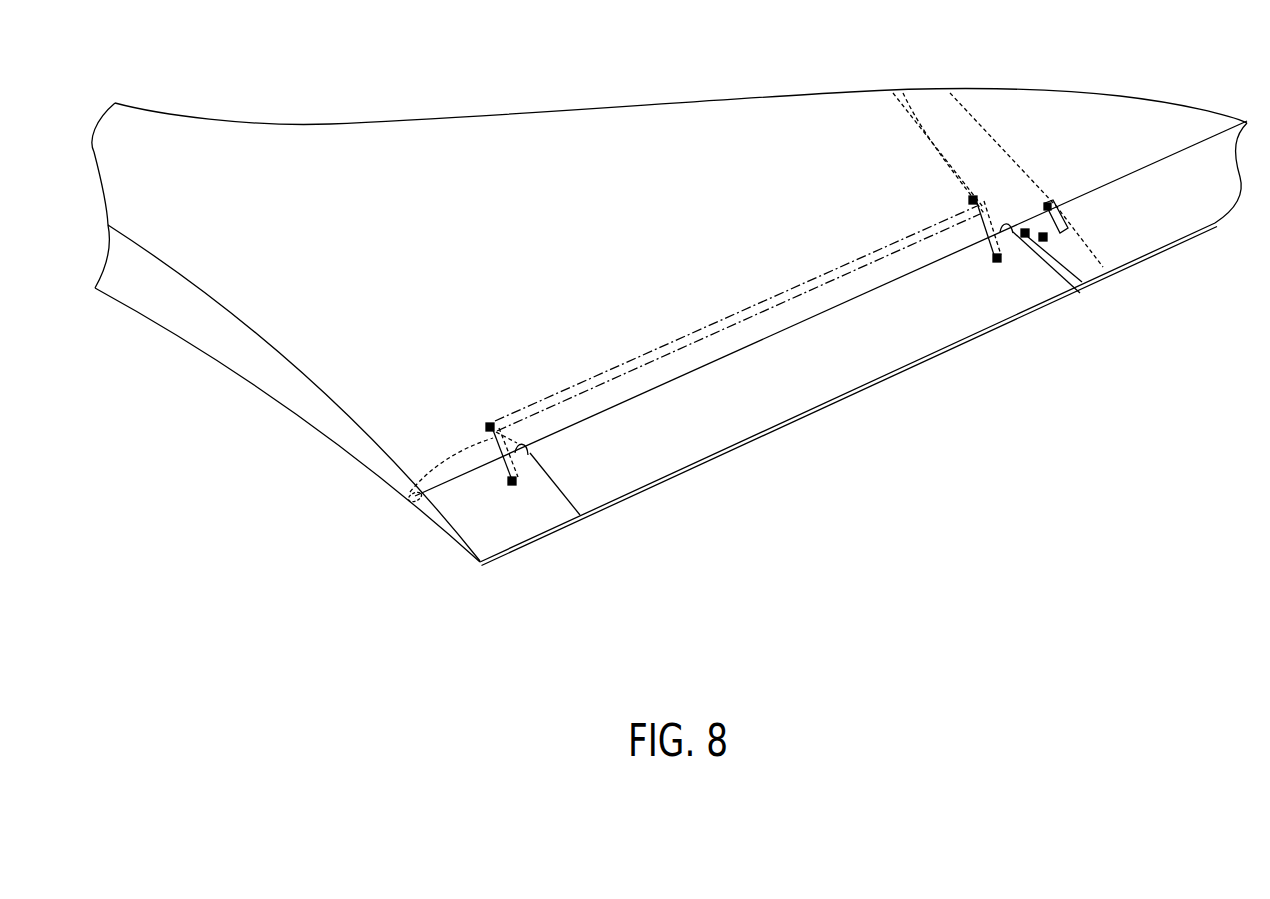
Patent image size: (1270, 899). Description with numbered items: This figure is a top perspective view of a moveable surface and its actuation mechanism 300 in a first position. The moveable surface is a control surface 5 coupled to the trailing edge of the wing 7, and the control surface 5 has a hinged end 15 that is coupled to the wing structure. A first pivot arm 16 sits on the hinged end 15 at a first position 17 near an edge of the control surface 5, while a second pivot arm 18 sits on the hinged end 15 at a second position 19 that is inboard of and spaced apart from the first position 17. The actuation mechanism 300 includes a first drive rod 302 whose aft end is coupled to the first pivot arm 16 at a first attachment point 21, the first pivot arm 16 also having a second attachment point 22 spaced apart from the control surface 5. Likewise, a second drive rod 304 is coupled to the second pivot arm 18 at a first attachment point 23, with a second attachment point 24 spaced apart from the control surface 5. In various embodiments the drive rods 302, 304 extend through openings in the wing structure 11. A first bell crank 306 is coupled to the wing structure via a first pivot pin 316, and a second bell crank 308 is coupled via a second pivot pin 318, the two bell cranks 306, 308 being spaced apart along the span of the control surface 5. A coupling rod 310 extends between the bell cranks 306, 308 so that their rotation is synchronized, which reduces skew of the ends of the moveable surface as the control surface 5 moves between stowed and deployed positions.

The control surface 5 is at (634, 448).
The wing 7 is at (495, 190).
The wing structure 11 is at (1027, 190).
The hinged end 15 is at (681, 394).
The first pivot arm 16 is at (543, 460).
The first position 17 is at (449, 487).
The second pivot arm 18 is at (1038, 262).
The second position 19 is at (950, 265).
The first attachment point 21 is at (502, 504).
The second attachment point 22 is at (550, 449).
The first attachment point 23 is at (991, 283).
The second attachment point 24 is at (1050, 238).
The actuation mechanism 300 is at (441, 595).
The first drive rod 302 is at (407, 495).
The second drive rod 304 is at (975, 229).
The first bell crank 306 is at (482, 422).
The second bell crank 308 is at (968, 200).
The coupling rod 310 is at (608, 382).
The first pivot pin 316 is at (484, 430).
The second pivot pin 318 is at (917, 113).